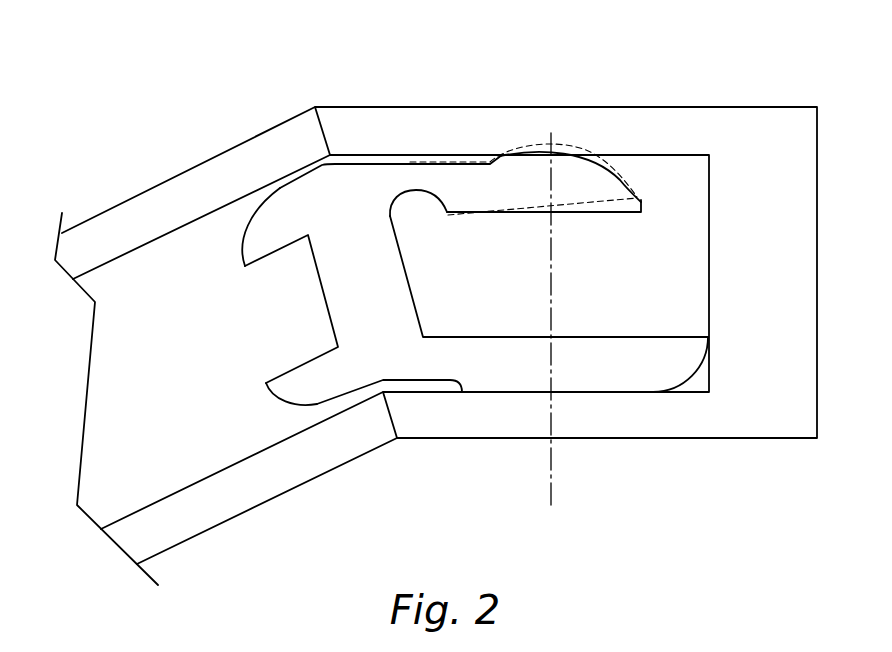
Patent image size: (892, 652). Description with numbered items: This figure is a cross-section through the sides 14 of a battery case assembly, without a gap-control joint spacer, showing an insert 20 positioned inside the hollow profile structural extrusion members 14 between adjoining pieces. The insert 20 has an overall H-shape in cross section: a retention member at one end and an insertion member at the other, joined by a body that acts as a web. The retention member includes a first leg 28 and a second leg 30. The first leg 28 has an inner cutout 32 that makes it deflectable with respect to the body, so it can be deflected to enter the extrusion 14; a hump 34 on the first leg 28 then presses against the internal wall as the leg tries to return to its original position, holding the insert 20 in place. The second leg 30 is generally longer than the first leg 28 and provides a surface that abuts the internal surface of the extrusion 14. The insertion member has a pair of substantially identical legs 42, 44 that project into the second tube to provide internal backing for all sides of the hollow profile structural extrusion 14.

The sides 14 is at (188, 182).
The insert 20 is at (197, 334).
The first leg 28 is at (643, 202).
The second leg 30 is at (673, 368).
The inner cutout 32 is at (418, 194).
The hump 34 is at (538, 163).
The leg 42 is at (253, 242).
The leg 44 is at (287, 392).